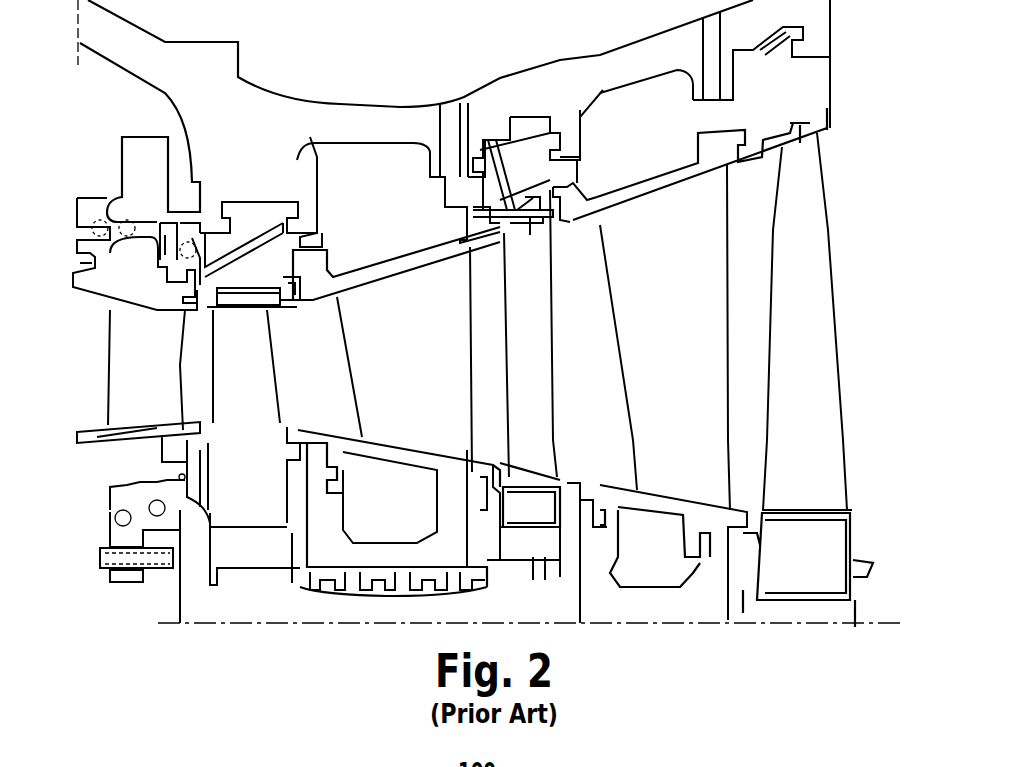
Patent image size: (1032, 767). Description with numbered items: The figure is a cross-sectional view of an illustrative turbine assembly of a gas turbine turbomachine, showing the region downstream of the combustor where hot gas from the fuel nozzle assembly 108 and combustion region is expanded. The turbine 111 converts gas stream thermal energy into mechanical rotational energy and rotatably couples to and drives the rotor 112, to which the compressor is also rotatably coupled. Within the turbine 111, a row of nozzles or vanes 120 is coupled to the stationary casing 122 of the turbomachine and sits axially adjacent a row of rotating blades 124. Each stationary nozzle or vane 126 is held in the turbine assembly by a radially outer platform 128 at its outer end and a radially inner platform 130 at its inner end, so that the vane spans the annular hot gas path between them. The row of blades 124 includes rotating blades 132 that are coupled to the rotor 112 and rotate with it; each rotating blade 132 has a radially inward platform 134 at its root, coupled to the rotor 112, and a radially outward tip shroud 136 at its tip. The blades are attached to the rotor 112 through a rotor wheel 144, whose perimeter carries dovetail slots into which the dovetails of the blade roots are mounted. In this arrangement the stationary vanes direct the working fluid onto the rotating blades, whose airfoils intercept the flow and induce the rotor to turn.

The fuel nozzle assembly 108 is at (374, 92).
The turbine 111 is at (598, 205).
The rotor 112 is at (545, 602).
The row of nozzles or vanes 120 is at (418, 250).
The stationary casing 122 is at (243, 153).
The row of rotating blades 124 is at (515, 272).
The nozzle or vane 126 is at (387, 355).
The radially outer platform 128 is at (392, 282).
The radially inner platform 130 is at (450, 440).
The rotating blade 132 is at (527, 318).
The radially inward platform 134 is at (523, 463).
The radially outward tip shroud 136 is at (530, 217).
The rotor wheel 144 is at (525, 568).